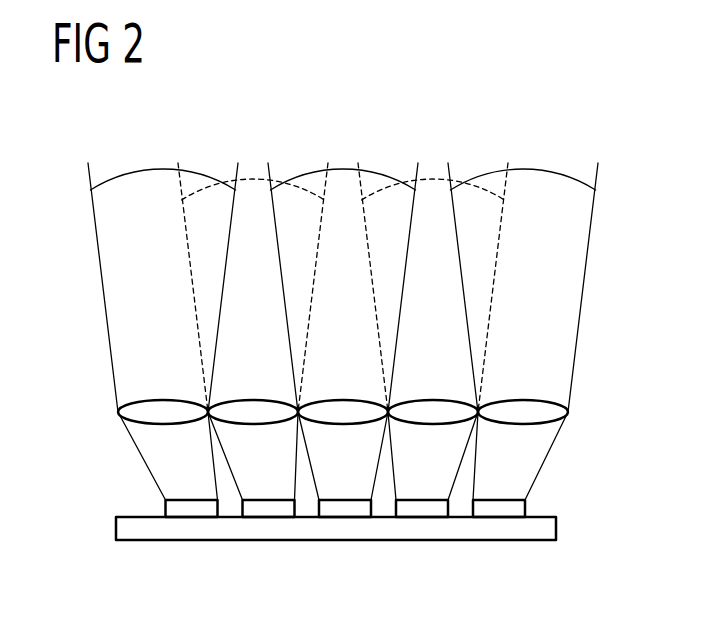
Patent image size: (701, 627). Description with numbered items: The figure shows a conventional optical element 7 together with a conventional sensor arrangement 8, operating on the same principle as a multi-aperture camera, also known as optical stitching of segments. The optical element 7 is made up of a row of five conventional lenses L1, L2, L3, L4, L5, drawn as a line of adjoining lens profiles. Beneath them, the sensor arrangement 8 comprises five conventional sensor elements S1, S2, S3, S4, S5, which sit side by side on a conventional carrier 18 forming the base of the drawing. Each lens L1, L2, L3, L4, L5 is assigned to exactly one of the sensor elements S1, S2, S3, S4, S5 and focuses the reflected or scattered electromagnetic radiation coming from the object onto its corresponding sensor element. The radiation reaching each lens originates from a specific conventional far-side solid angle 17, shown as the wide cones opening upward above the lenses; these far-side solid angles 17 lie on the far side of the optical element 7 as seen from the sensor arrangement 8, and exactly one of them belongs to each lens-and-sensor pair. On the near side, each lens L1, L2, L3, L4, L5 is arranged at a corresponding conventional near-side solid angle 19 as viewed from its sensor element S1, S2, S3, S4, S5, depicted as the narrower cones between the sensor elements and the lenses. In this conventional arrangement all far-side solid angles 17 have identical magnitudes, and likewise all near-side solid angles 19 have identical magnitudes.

The conventional far-side solid angle 17 is at (156, 169).
The conventional near-side solid angle 19 is at (552, 465).
The conventional optical element 7 is at (382, 378).
The conventional lens L1 is at (160, 401).
The conventional lens L2 is at (250, 401).
The conventional lens L3 is at (340, 401).
The conventional lens L4 is at (430, 401).
The conventional lens L5 is at (522, 401).
The conventional sensor arrangement 8 is at (389, 539).
The conventional sensor element S1 is at (192, 508).
The conventional sensor element S2 is at (269, 508).
The conventional sensor element S3 is at (345, 508).
The conventional sensor element S4 is at (422, 508).
The conventional sensor element S5 is at (499, 508).
The conventional carrier 18 is at (116, 526).